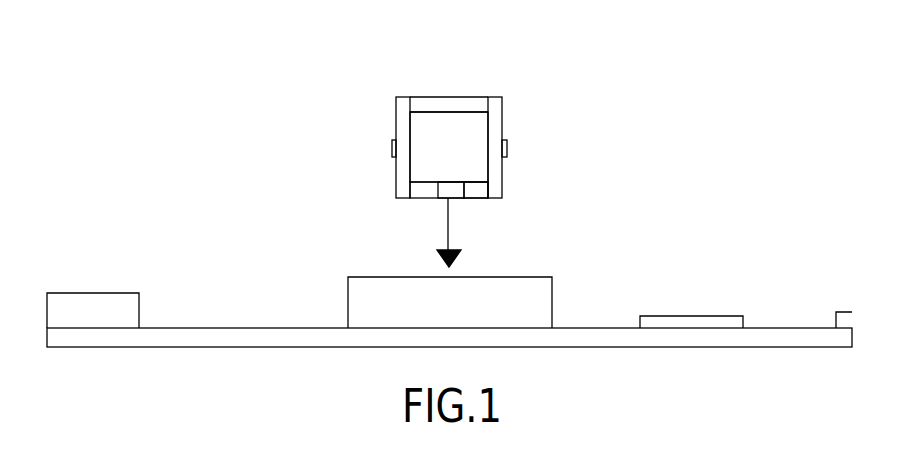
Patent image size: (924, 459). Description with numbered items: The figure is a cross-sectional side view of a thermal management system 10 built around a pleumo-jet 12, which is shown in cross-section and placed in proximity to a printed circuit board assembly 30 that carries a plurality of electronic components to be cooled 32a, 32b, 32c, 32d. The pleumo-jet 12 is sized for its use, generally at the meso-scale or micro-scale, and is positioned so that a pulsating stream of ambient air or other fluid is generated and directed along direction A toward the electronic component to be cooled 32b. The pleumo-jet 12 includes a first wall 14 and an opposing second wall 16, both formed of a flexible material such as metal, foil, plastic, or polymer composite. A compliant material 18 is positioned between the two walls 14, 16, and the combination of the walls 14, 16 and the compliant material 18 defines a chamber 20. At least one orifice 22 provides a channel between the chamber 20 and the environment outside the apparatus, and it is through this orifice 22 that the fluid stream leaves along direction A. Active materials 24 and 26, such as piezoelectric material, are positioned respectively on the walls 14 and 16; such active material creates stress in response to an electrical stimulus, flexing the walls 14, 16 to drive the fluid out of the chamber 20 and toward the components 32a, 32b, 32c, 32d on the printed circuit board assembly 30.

The thermal management system 10 is at (620, 114).
The pleumo-jet 12 is at (396, 108).
The first wall 14 is at (496, 109).
The second wall 16 is at (409, 181).
The compliant material 18 is at (448, 103).
The chamber 20 is at (458, 143).
The orifice 22 is at (447, 188).
The active material 24 is at (508, 147).
The active material 26 is at (391, 148).
The direction A is at (448, 224).
The printed circuit board assembly 30 is at (821, 337).
The electronic component to be cooled 32a is at (139, 303).
The electronic component to be cooled 32b is at (352, 310).
The electronic component to be cooled 32c is at (690, 315).
The electronic component to be cooled 32d is at (848, 312).